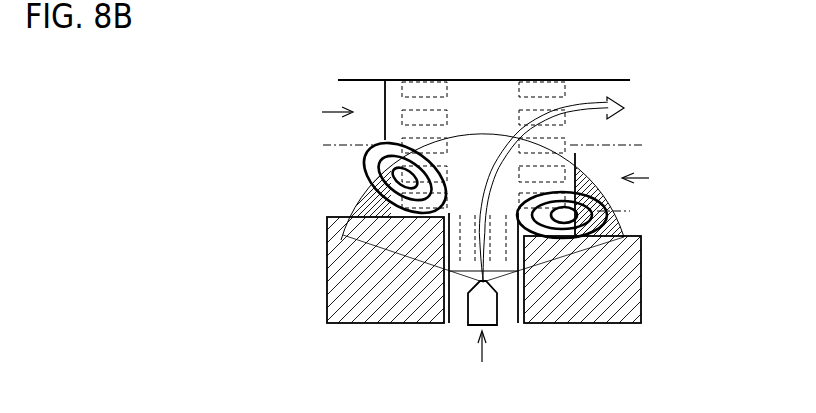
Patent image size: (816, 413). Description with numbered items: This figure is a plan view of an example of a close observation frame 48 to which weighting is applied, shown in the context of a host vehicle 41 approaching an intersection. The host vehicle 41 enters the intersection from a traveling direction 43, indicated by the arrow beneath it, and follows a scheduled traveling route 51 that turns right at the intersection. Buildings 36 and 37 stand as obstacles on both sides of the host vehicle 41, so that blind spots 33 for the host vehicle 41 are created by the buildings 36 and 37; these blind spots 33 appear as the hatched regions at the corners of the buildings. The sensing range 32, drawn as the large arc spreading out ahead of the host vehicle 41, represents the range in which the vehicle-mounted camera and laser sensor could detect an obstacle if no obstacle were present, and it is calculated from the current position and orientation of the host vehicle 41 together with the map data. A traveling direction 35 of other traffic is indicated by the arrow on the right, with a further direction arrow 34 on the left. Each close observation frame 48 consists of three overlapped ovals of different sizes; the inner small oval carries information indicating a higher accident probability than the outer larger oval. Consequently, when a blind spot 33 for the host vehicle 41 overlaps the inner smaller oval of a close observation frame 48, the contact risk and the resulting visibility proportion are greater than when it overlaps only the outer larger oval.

The sensing range 32 is at (485, 133).
The blind spot 33 is at (362, 200).
The inflow direction 34 is at (322, 112).
The traveling direction 35 is at (649, 178).
The building 36 is at (642, 287).
The building 37 is at (326, 270).
The host vehicle 41 is at (497, 329).
The traveling direction 43 is at (475, 350).
The close observation frame 48 is at (363, 155).
The scheduled traveling route 51 is at (593, 104).